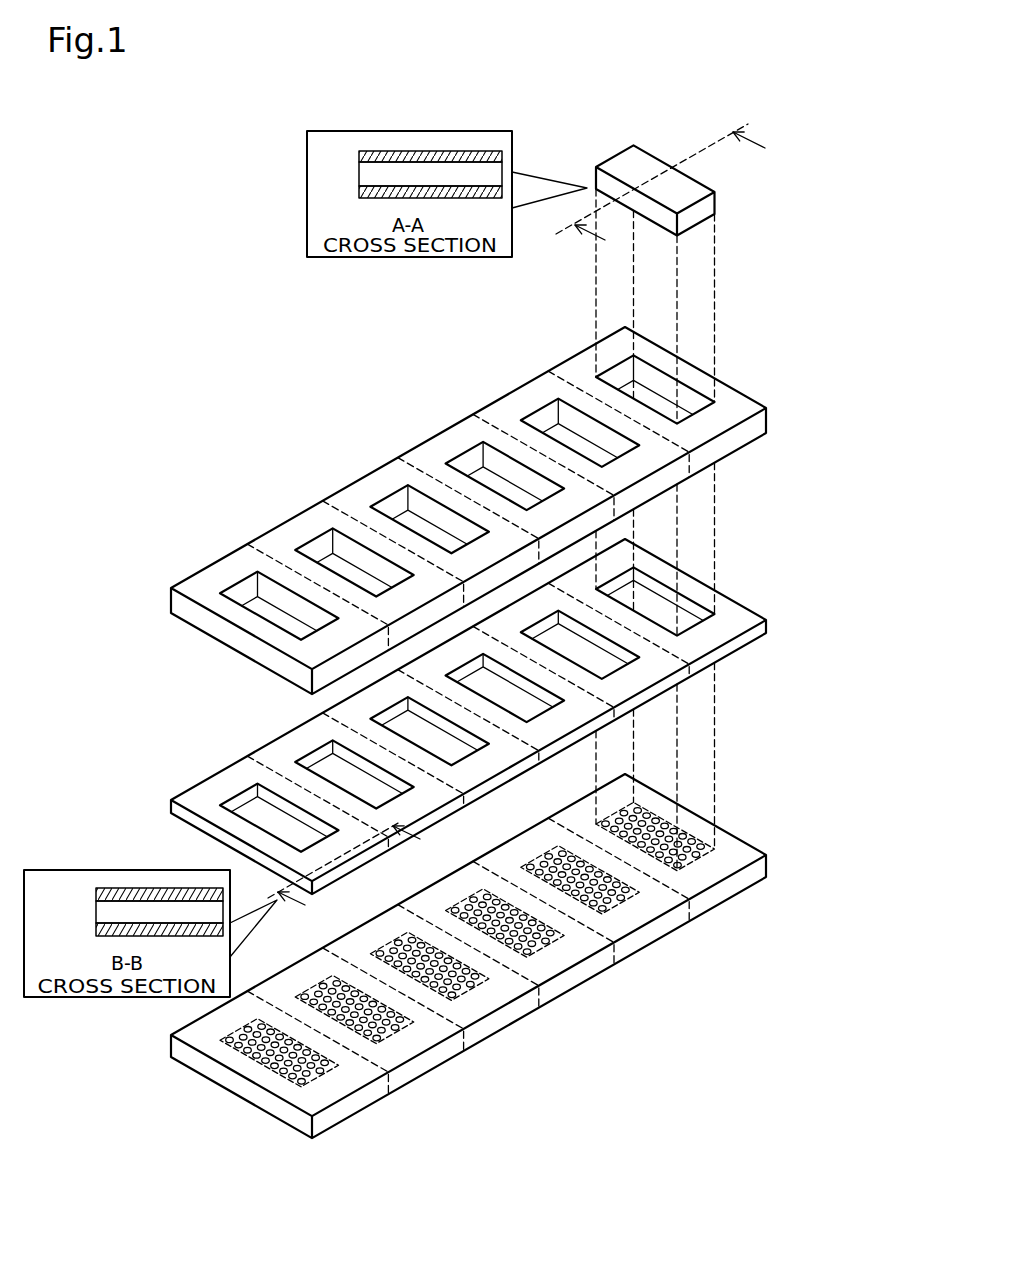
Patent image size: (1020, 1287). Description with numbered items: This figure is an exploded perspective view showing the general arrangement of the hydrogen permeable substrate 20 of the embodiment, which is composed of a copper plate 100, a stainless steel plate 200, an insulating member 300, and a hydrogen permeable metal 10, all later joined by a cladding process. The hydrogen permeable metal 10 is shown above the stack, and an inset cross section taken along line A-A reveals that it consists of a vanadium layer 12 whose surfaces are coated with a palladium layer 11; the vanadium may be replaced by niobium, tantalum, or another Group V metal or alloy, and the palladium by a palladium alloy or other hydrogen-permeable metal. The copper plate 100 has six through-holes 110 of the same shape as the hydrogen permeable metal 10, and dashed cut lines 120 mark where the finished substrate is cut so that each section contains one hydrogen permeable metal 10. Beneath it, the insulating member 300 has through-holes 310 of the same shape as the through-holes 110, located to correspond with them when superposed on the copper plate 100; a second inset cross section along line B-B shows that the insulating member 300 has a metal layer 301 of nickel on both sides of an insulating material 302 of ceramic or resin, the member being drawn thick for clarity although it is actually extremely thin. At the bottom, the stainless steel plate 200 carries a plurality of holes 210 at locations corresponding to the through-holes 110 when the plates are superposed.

The hydrogen permeable metal 10 is at (655, 150).
The palladium layer 11 is at (358, 156).
The vanadium layer 12 is at (358, 178).
The hydrogen permeable substrate 20 is at (755, 287).
The copper plate 100 is at (748, 418).
The through-holes 110 is at (263, 612).
The cut lines 120 is at (268, 556).
The stainless steel plate 200 is at (748, 858).
The holes 210 is at (328, 1071).
The insulating member 300 is at (748, 624).
The metal layer 301 is at (96, 893).
The insulating material 302 is at (96, 912).
The through-holes 310 is at (303, 833).